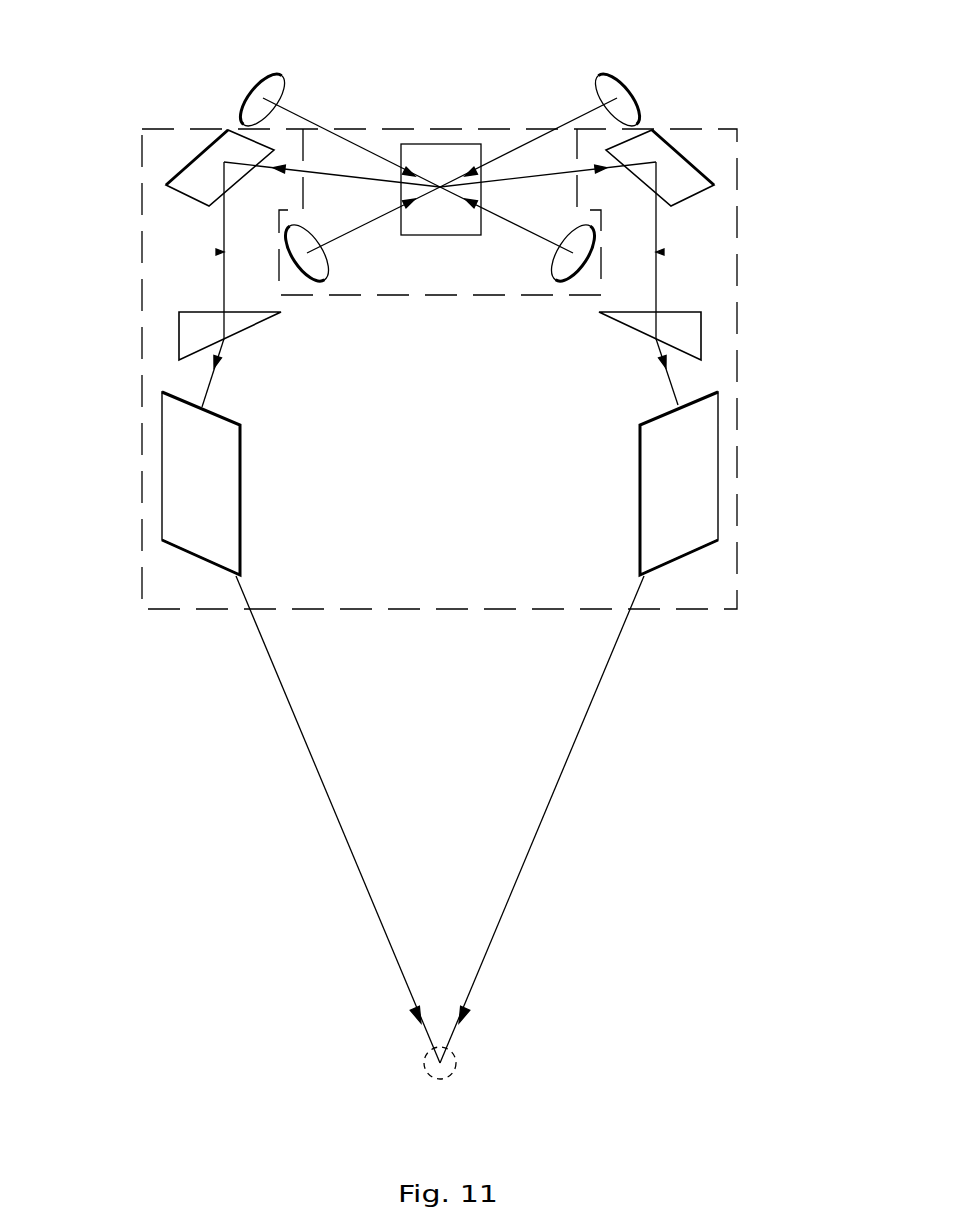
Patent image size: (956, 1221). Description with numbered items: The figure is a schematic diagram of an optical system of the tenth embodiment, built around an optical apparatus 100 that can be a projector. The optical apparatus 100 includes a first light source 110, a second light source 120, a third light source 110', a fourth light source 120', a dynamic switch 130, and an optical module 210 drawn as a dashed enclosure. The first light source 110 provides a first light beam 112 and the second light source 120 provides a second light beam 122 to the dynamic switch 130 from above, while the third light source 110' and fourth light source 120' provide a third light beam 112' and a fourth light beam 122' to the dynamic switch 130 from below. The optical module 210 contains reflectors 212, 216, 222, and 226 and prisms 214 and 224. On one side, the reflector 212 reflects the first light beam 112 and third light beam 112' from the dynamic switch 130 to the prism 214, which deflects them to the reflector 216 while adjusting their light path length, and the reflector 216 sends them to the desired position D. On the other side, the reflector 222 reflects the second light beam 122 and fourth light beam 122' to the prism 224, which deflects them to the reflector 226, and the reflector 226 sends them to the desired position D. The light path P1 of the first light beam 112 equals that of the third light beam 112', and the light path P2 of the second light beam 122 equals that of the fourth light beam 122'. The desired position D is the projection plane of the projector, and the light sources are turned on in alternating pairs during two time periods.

The optical apparatus 100 is at (130, 70).
The first light source 110 is at (269, 75).
The second light source 120 is at (617, 75).
The third light source 110' is at (351, 268).
The fourth light source 120' is at (534, 268).
The first light beam 112 is at (554, 482).
The second light beam 122 is at (324, 482).
The third light beam 112' is at (373, 240).
The fourth light beam 122' is at (506, 240).
The dynamic switch 130 is at (430, 153).
The optical module 210 is at (737, 363).
The reflector 212 is at (688, 175).
The reflector 222 is at (192, 175).
The prism 214 is at (640, 323).
The prism 224 is at (240, 323).
The reflector 216 is at (657, 453).
The reflector 226 is at (223, 453).
The light path P1 is at (585, 718).
The light path P2 is at (295, 718).
The desired position D is at (456, 1063).